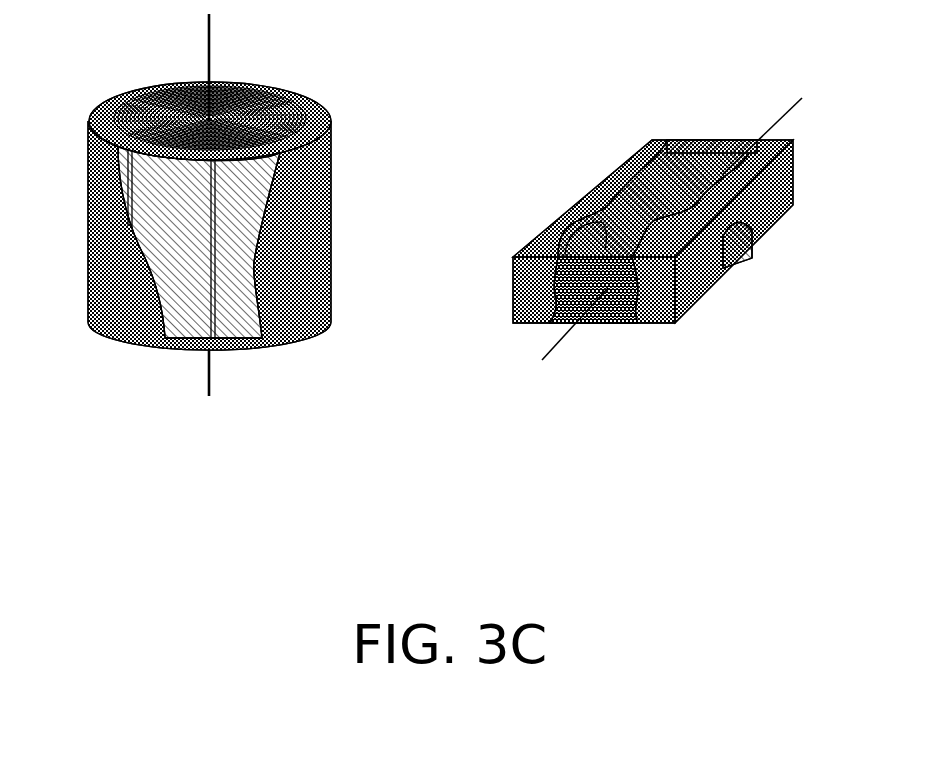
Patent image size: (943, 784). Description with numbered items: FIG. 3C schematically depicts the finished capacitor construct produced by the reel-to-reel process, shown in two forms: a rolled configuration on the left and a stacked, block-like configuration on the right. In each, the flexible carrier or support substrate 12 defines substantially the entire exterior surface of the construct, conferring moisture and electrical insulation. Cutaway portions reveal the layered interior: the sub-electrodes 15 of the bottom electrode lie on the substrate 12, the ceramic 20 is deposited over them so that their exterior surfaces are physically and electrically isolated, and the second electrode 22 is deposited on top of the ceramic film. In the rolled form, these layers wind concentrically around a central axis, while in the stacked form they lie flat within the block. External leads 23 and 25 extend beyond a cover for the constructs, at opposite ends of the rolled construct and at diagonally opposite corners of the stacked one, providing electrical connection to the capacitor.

The carrier or support substrate 12 is at (213, 207).
The sub-electrodes 15 is at (150, 195).
The ceramic 20 is at (222, 263).
The second electrode 22 is at (158, 85).
The external lead 23 is at (212, 25).
The external lead 25 is at (205, 372).